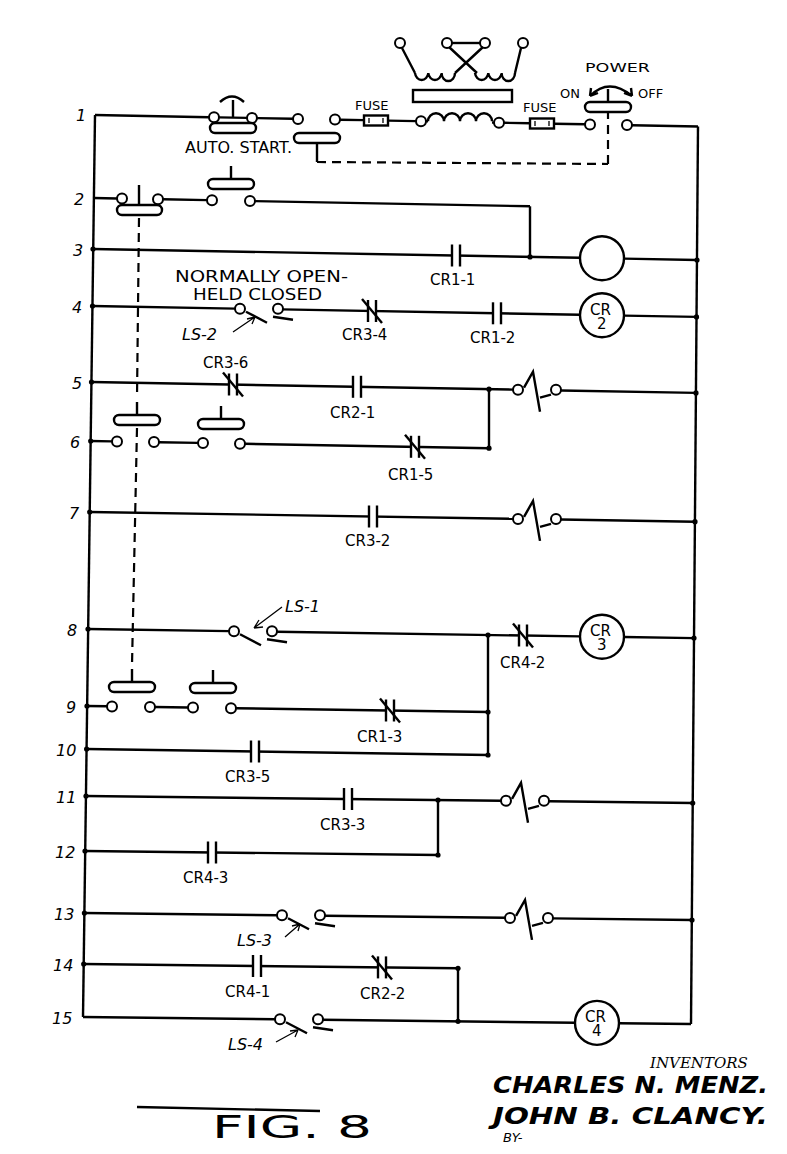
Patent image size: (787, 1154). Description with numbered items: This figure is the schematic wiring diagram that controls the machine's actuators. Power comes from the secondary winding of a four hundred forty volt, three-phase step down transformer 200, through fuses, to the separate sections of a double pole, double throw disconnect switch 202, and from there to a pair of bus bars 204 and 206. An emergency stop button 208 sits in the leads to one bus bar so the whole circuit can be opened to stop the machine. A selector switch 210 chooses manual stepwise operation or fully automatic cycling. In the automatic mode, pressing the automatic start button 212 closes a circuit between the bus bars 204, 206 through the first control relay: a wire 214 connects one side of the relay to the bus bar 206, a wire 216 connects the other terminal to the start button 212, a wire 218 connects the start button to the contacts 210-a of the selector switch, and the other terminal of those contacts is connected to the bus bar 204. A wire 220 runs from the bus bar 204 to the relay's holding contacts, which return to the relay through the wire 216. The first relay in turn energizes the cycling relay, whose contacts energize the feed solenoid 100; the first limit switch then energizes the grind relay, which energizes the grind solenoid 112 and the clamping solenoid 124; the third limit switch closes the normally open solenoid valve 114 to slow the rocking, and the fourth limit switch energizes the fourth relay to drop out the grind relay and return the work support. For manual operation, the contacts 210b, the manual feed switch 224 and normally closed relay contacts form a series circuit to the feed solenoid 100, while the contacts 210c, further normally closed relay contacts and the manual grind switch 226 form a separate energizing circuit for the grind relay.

The feed solenoid 100 is at (541, 407).
The grind solenoid 112 is at (541, 537).
The solenoid valve 114 is at (532, 907).
The clamping solenoid 124 is at (528, 790).
The step down transformer 200 is at (523, 62).
The disconnect switch 202 is at (428, 166).
The bus bar 204 is at (96, 112).
The bus bar 206 is at (668, 128).
The emergency stop button 208 is at (242, 105).
The selector switch 210 is at (141, 240).
The contacts of selector switch 210-a is at (163, 211).
The contacts of selector switch 210b is at (141, 412).
The contacts of selector switch 210c is at (141, 683).
The automatic start button 212 is at (256, 186).
The wire 214 is at (657, 258).
The wire 216 is at (427, 206).
The wire 218 is at (199, 198).
The wire 220 is at (286, 251).
The manual feed switch 224 is at (243, 433).
The manual grind switch 226 is at (237, 686).